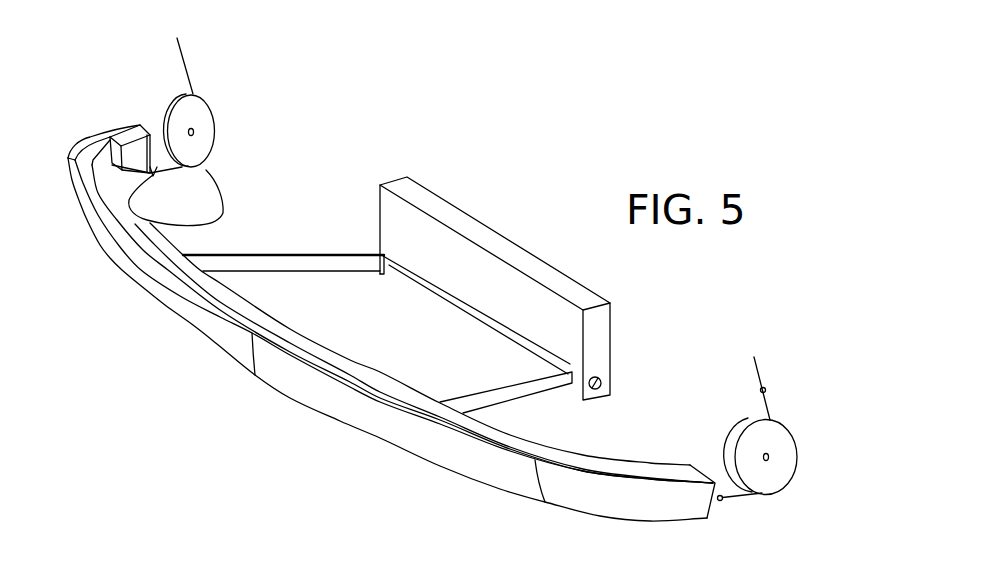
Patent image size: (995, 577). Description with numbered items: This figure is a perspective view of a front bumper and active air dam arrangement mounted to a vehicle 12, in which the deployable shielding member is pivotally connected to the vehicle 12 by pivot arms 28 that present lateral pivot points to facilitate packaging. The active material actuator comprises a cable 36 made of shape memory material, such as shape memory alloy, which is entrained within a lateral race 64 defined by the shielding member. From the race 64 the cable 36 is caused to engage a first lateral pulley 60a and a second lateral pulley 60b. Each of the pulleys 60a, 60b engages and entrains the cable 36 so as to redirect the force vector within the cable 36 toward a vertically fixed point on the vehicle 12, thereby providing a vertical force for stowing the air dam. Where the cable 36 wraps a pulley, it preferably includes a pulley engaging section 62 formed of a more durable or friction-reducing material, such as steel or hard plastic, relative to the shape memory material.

The vehicle 12 is at (504, 292).
The pivot arms 28 is at (308, 254).
The cable 36 is at (756, 359).
The first lateral pulley 60a is at (214, 128).
The second lateral pulley 60b is at (790, 450).
The pulley engaging section 62 is at (767, 403).
The lateral race 64 is at (225, 209).